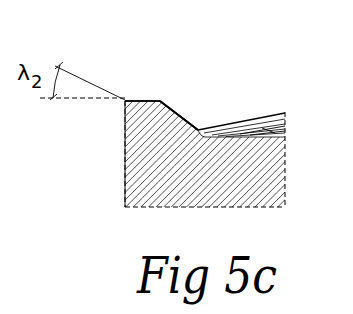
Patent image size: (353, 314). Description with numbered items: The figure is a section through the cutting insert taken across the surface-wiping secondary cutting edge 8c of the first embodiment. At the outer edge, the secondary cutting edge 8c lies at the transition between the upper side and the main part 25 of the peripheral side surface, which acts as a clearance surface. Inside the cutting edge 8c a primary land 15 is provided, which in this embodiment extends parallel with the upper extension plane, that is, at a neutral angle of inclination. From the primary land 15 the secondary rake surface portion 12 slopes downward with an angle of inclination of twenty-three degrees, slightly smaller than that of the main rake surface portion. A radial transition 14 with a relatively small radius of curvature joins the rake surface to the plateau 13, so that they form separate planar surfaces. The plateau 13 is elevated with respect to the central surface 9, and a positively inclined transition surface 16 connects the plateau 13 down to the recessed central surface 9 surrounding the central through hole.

The primary land 15 is at (128, 99).
The secondary rake surface portion 12 is at (136, 100).
The plateau 13 is at (157, 100).
The transition 14 is at (143, 106).
The transition surface 16 is at (186, 115).
The central surface 9 is at (258, 139).
The surface-wiping secondary cutting edge 8c is at (124, 100).
The main part of the side surface 25 is at (125, 178).